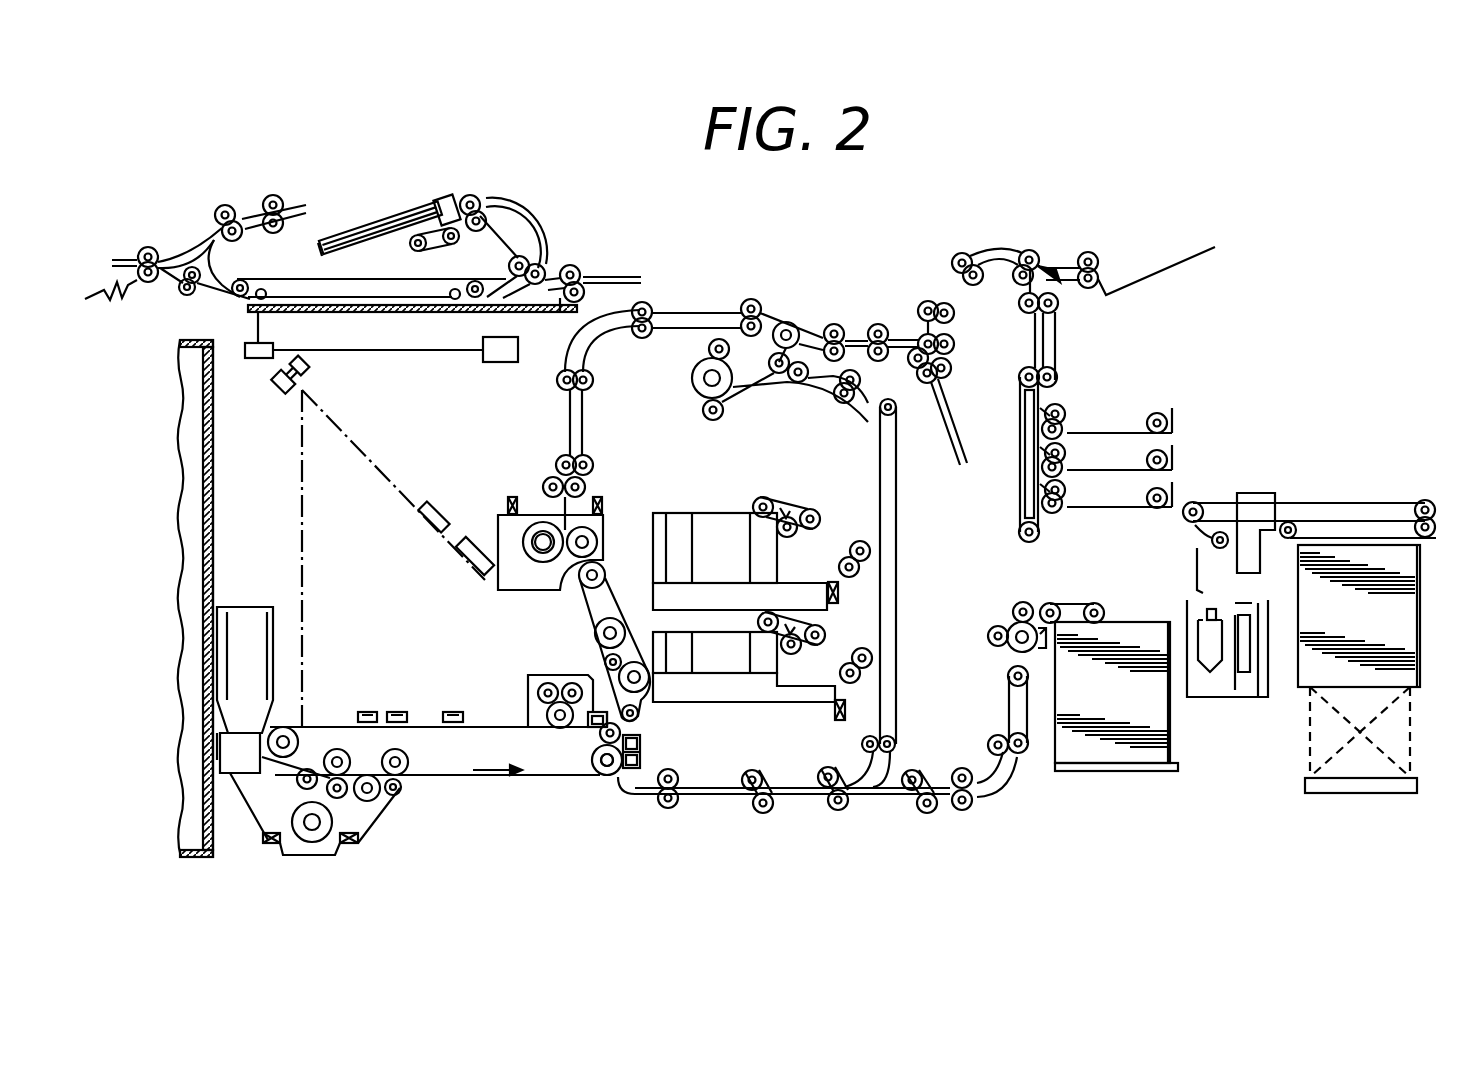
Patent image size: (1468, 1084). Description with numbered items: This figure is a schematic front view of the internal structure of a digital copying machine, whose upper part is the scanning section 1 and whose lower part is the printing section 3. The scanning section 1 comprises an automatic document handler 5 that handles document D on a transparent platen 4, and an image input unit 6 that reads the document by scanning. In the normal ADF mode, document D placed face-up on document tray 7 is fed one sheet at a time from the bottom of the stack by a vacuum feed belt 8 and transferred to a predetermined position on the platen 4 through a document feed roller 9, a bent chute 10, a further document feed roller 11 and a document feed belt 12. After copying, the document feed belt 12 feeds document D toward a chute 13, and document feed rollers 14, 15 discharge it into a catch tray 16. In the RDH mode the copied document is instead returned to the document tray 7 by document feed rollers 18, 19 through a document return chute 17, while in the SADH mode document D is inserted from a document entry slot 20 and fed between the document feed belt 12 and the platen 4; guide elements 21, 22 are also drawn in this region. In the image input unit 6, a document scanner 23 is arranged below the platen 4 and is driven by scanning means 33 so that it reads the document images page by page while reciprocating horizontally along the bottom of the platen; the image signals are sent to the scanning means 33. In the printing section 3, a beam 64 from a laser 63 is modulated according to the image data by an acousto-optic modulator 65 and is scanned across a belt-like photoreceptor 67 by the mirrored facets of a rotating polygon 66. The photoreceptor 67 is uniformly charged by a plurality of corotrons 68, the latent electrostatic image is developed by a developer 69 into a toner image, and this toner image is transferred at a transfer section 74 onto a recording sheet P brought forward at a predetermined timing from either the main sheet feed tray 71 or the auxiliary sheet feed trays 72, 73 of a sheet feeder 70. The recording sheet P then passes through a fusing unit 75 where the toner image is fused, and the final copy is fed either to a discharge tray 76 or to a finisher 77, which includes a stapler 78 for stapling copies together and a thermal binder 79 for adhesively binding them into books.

The scanning section 1 is at (350, 164).
The printing section 3 is at (376, 576).
The transparent platen 4 is at (402, 312).
The automatic document handler 5 is at (390, 215).
The image input unit 6 is at (352, 344).
The document tray 7 is at (318, 256).
The vacuum feed belt 8 is at (454, 248).
The document feed roller 9 is at (480, 196).
The bent chute 10 is at (500, 208).
The document feed roller 11 is at (538, 262).
The document feed belt 12 is at (370, 288).
The chute 13 is at (170, 275).
The document feed roller 14 is at (187, 297).
The document feed roller 15 is at (148, 246).
The catch tray 16 is at (128, 290).
The document return chute 17 is at (215, 252).
The document feed roller 18 is at (224, 204).
The document feed roller 19 is at (272, 194).
The document entry slot 20 is at (600, 275).
The roller pair 21 is at (572, 264).
The guide 22 is at (556, 312).
The document scanner 23 is at (252, 343).
The scanning means 33 is at (505, 362).
The laser 63 is at (466, 570).
The beam 64 is at (384, 460).
The acousto-optic modulator 65 is at (430, 505).
The rotating polygon 66 is at (312, 370).
The belt-like photoreceptor 67 is at (492, 727).
The corotrons 68 is at (453, 712).
The developer 69 is at (392, 805).
The sheet feeder 70 is at (958, 684).
The main sheet feed tray 71 is at (1110, 772).
The auxiliary sheet feed tray 72 is at (724, 513).
The auxiliary sheet feed tray 73 is at (726, 702).
The transfer section 74 is at (605, 800).
The fusing unit 75 is at (618, 525).
The discharge tray 76 is at (1174, 268).
The finisher 77 is at (1243, 422).
The stapler 78 is at (1174, 442).
The thermal binder 79 is at (1352, 494).
The document D is at (352, 214).
The recording sheet P is at (1150, 718).